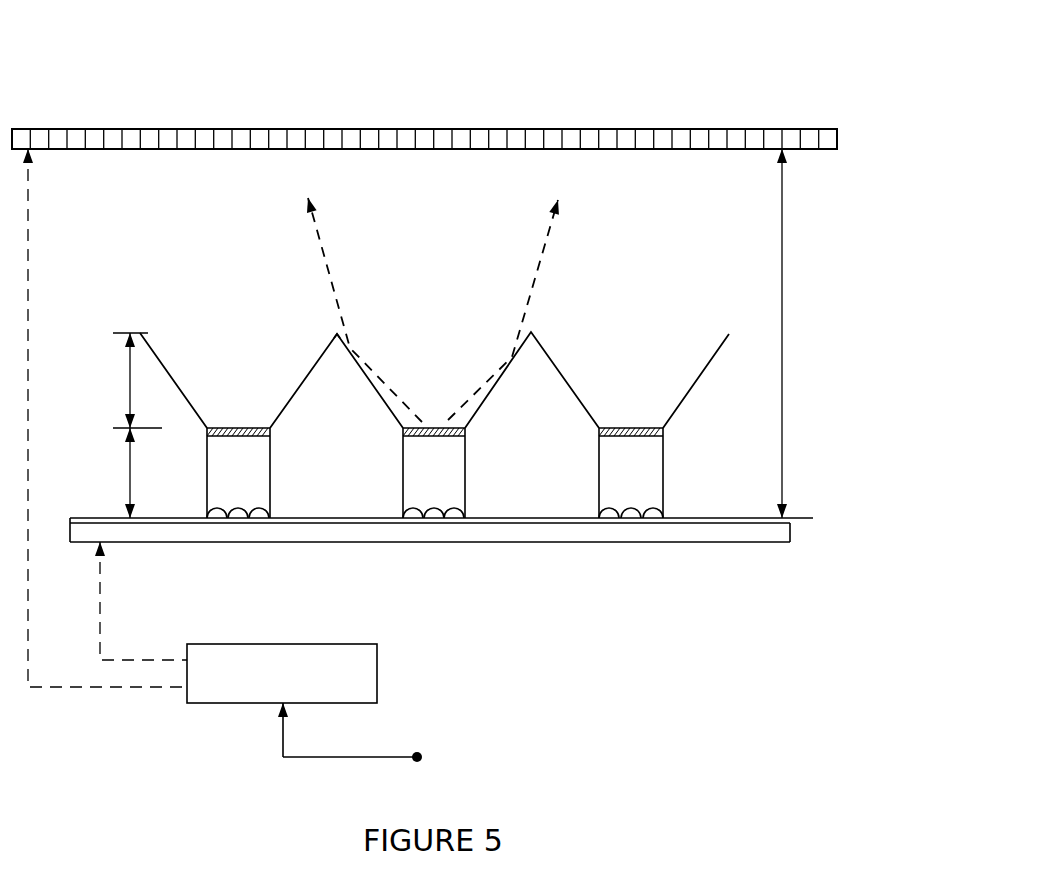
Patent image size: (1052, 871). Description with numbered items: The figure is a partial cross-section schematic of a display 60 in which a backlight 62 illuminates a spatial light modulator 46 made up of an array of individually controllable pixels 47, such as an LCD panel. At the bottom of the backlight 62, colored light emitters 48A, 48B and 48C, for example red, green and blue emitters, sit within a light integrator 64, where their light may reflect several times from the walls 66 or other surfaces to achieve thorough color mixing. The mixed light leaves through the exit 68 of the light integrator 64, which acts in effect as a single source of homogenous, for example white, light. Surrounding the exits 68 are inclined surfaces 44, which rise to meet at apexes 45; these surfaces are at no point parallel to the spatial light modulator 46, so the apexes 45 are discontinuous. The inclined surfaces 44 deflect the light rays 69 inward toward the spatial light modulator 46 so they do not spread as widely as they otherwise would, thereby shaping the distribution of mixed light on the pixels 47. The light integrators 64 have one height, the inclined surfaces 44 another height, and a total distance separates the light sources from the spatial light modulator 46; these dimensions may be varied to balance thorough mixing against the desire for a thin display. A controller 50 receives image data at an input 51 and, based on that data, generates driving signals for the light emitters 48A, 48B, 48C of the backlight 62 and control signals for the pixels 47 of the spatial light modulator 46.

The display 60 is at (175, 55).
The spatial light modulator 46 is at (837, 138).
The pixels 47 is at (497, 129).
The light rays 69 is at (333, 288).
The apexes 45 is at (337, 334).
The inclined surfaces 44 is at (302, 383).
The exit 68 is at (603, 428).
The walls 66 is at (663, 452).
The light integrator 64 is at (633, 473).
The backlight 62 is at (511, 463).
The colored light emitter 48A is at (413, 512).
The colored light emitter 48B is at (434, 512).
The colored light emitter 48C is at (453, 512).
The controller 50 is at (377, 673).
The input 51 is at (277, 738).